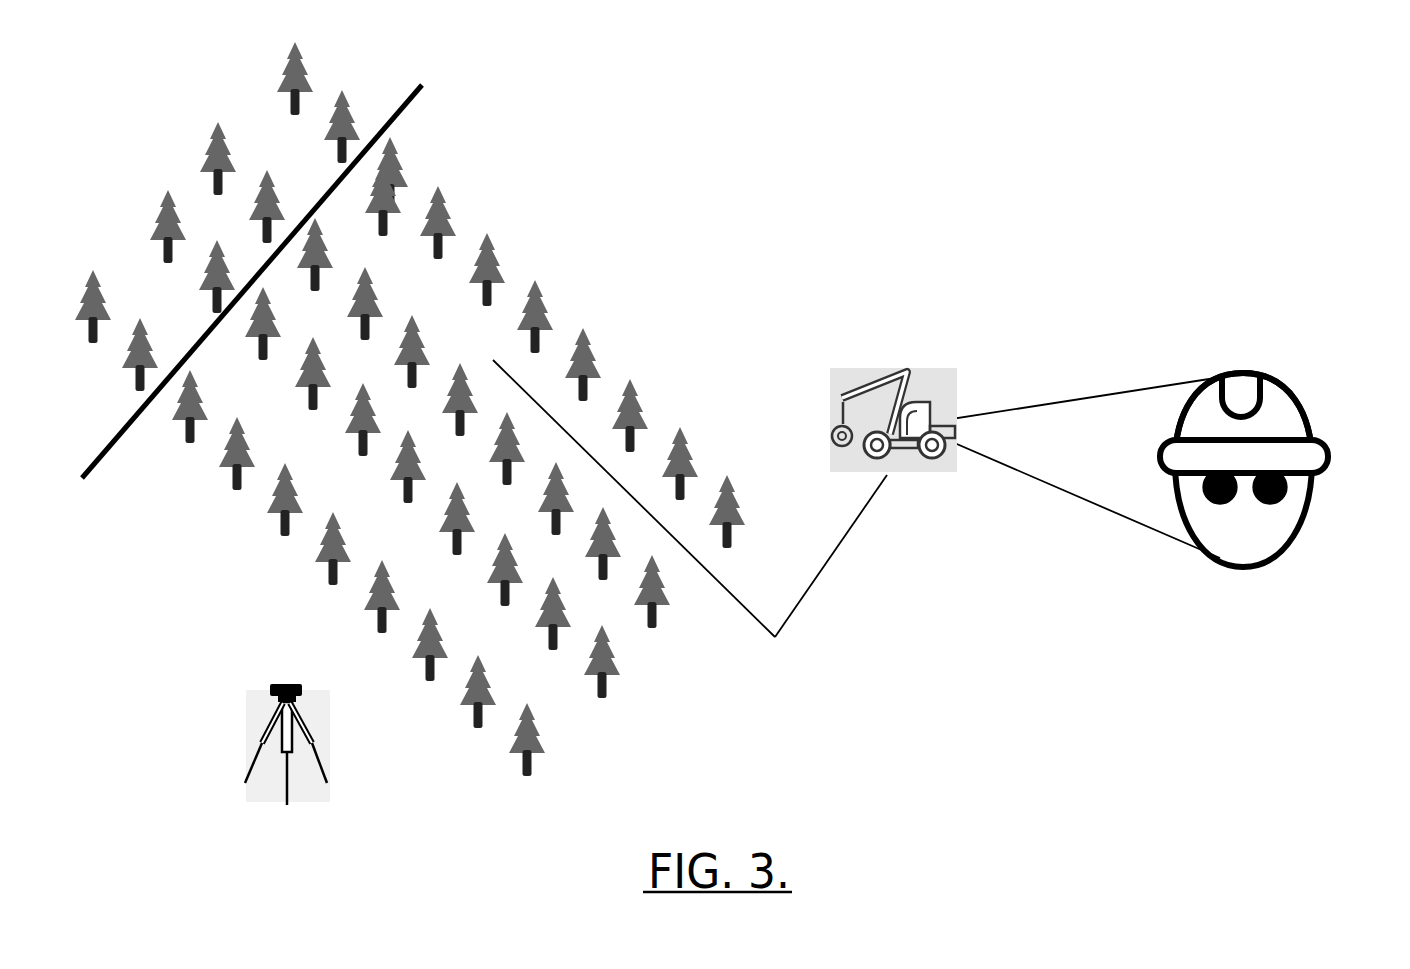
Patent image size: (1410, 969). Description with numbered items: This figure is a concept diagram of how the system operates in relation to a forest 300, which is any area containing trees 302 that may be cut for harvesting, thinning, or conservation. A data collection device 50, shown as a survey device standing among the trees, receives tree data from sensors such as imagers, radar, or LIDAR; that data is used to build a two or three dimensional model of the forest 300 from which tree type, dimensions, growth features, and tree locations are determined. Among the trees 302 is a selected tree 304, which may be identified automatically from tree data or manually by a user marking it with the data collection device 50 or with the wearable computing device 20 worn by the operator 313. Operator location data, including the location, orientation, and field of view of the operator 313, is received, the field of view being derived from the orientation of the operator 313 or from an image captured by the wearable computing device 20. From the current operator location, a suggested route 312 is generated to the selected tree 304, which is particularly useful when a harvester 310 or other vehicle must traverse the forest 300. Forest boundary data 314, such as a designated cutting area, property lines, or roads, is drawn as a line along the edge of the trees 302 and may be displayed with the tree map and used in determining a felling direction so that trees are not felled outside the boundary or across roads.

The wearable computing device 20 is at (1288, 487).
The data collection device 50 is at (295, 725).
The forest 300 is at (605, 192).
The trees 302 is at (383, 163).
The selected tree 304 is at (413, 362).
The harvester 310 is at (892, 368).
The suggested route 312 is at (763, 623).
The operator 313 is at (1283, 390).
The forest boundary data 314 is at (422, 85).